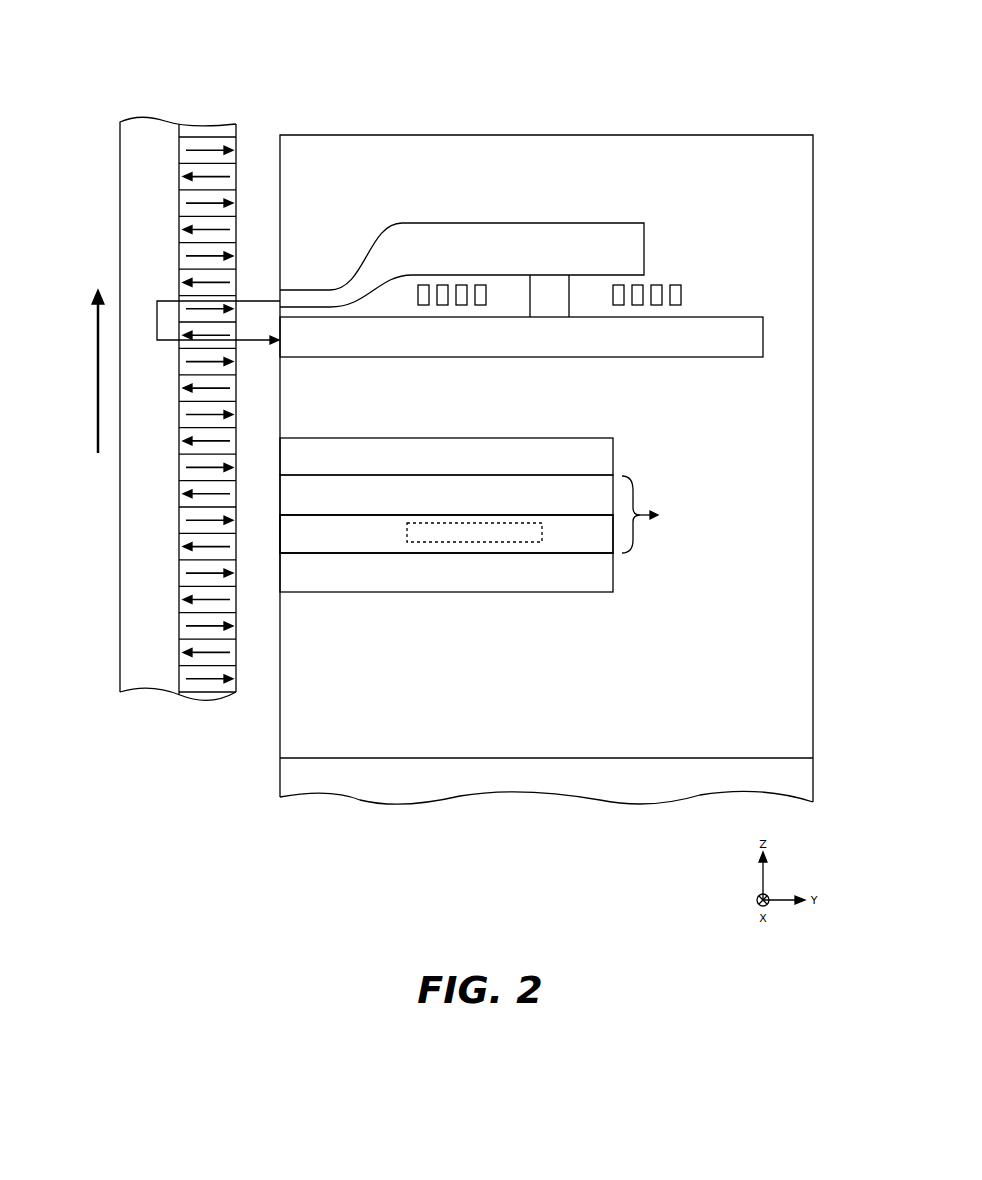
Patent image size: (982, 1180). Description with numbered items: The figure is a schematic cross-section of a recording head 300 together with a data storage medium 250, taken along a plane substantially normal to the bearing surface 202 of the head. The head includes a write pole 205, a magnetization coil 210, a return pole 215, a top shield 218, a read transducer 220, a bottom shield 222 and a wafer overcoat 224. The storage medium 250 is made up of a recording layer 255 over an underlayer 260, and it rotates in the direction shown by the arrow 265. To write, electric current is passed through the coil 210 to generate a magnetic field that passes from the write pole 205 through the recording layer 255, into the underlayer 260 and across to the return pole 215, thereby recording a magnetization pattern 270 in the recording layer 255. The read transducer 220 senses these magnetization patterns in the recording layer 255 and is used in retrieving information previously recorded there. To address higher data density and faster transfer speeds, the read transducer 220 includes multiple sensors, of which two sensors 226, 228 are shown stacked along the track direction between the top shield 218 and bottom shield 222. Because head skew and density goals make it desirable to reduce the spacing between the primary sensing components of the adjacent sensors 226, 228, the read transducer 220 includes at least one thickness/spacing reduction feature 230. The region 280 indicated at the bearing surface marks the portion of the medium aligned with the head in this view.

The magnetic recording head 300 is at (666, 88).
The bearing surface 202 is at (278, 735).
The write pole 205 is at (323, 290).
The magnetization coil 210 is at (461, 300).
The return pole 215 is at (467, 332).
The top shield 218 is at (530, 460).
The read transducer 220 is at (655, 514).
The bottom shield 222 is at (548, 572).
The wafer overcoat 224 is at (735, 405).
The sensor 226 is at (568, 487).
The sensor 228 is at (592, 535).
The thickness/spacing reduction feature 230 is at (676, 285).
The data storage medium 250 is at (158, 700).
The recording layer 255 is at (208, 134).
The underlayer 260 is at (136, 668).
The arrow 265 is at (97, 375).
The magnetization pattern 270 is at (215, 150).
The bit region read by sensor 280 is at (218, 322).